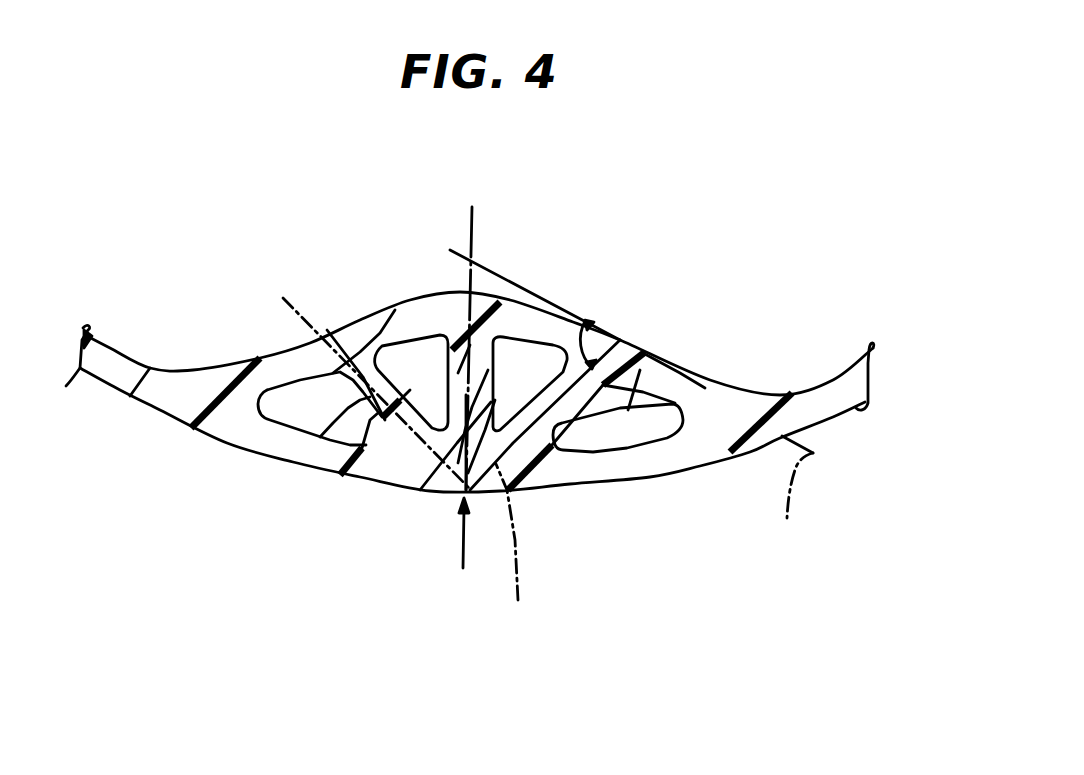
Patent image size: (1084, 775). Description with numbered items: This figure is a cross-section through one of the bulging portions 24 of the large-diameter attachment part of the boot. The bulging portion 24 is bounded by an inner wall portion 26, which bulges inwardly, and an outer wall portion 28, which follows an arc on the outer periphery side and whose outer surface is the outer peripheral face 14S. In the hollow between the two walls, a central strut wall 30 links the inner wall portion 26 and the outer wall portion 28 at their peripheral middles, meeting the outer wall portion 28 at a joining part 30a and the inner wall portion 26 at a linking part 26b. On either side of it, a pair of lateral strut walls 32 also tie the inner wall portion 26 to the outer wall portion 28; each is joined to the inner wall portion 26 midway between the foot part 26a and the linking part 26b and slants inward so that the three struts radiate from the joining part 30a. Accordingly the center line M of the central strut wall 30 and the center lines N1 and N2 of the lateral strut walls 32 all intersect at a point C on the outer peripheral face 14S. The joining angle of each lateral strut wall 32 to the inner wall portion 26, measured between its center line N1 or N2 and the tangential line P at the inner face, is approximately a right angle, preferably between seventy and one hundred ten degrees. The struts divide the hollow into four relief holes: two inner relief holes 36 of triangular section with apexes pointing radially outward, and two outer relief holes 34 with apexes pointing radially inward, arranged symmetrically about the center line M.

The bulging portion 24 is at (335, 293).
The inner wall portion 26 is at (411, 298).
The foot part 26a is at (207, 390).
The linking part 26b is at (480, 307).
The outer wall portion 28 is at (590, 480).
The central strut wall 30 is at (405, 400).
The joining part 30a is at (465, 499).
The lateral strut wall 32 is at (360, 420).
The relief hole 34 is at (276, 414).
The relief hole 36 is at (353, 477).
The outer peripheral face 14S is at (170, 420).
The point C is at (460, 515).
The center line M is at (473, 218).
The center line N1 is at (527, 546).
The center line N2 is at (364, 374).
The tangential line P is at (793, 504).